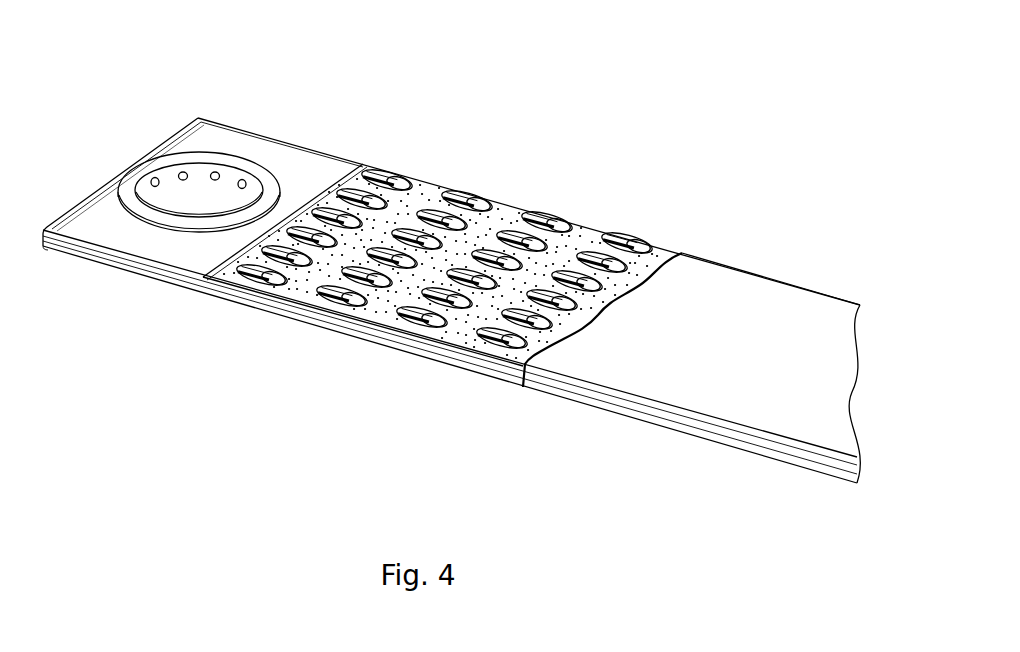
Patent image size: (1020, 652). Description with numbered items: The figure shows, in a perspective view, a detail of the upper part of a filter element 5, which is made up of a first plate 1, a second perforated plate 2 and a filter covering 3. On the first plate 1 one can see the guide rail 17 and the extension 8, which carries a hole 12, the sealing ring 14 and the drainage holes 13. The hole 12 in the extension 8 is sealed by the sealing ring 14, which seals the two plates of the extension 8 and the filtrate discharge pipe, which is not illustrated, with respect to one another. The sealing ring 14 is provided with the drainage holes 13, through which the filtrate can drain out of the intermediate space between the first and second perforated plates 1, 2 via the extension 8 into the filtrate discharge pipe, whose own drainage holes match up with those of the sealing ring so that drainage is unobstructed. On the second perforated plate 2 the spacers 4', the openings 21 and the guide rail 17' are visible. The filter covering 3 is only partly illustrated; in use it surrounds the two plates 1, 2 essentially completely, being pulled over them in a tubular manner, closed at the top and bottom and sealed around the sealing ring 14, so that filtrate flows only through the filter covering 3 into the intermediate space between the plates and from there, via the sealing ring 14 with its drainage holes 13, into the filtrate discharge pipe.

The first plate 1 is at (245, 318).
The second perforated plate 2 is at (442, 241).
The filter covering 3 is at (752, 292).
The spacer 4' is at (391, 114).
The filter element 5 is at (567, 444).
The extension 8 is at (290, 160).
The hole 12 is at (168, 204).
The drainage holes 13 is at (216, 172).
The sealing ring 14 is at (163, 160).
The guide rail 17 is at (450, 372).
The guide rail 17' is at (363, 363).
The grating surface 21 is at (400, 295).